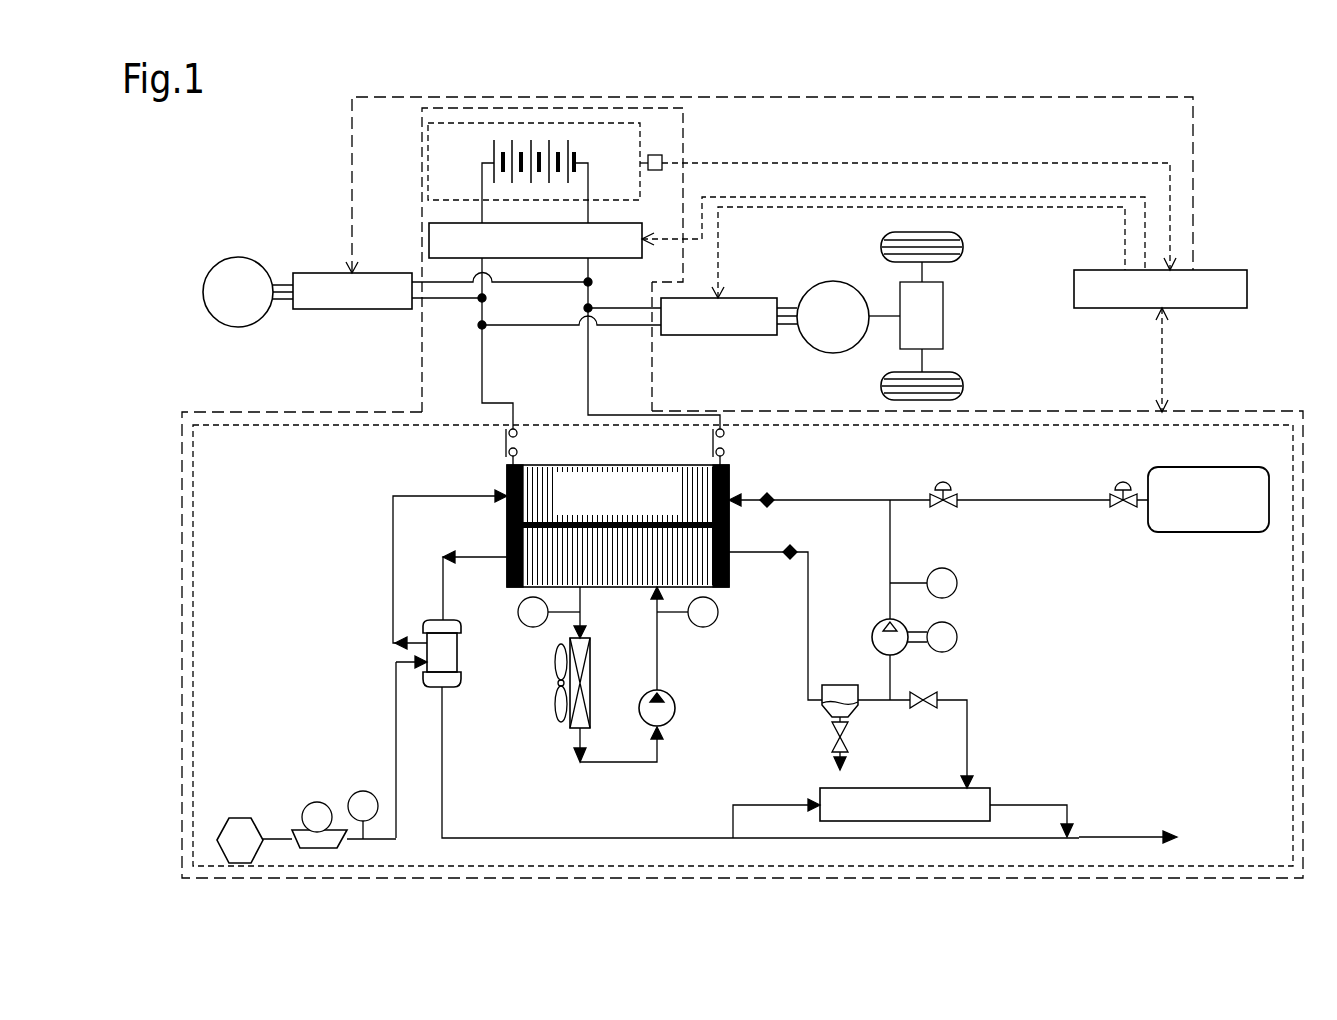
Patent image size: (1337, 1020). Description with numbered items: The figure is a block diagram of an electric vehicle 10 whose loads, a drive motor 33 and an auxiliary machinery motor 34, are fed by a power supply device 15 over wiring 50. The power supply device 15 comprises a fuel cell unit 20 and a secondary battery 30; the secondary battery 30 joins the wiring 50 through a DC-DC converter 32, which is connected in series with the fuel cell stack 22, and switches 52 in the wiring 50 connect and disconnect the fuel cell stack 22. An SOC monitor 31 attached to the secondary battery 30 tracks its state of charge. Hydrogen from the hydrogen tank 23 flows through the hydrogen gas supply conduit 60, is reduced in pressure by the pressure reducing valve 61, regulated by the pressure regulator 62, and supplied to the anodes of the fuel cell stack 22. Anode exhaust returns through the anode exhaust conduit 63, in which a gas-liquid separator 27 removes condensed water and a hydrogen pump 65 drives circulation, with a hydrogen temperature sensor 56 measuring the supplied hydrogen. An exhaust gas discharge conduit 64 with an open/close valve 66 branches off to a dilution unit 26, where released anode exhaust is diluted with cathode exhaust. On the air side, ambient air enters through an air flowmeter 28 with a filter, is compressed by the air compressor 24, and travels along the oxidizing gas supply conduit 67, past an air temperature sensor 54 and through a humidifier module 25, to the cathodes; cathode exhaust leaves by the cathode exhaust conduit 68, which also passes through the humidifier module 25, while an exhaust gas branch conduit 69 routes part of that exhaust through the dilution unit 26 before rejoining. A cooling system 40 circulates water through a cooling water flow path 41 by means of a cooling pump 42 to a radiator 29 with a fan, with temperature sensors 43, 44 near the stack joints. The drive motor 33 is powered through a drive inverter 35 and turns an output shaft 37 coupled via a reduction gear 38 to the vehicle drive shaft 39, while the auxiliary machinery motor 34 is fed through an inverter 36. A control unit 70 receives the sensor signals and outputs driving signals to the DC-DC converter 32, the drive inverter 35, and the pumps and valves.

The electric vehicle 10 is at (1232, 176).
The power supply device 15 is at (1043, 408).
The fuel cell unit 20 is at (1045, 425).
The fuel cell stack 22 is at (565, 465).
The hydrogen tank 23 is at (1235, 532).
The air compressor 24 is at (316, 802).
The humidifier module 25 is at (457, 655).
The dilution unit 26 is at (990, 790).
The gas-liquid separator 27 is at (835, 685).
The air flowmeter 28 is at (258, 818).
The radiator 29 is at (590, 675).
The secondary battery 30 is at (612, 200).
The SOC monitor 31 is at (656, 155).
The DC-DC converter 32 is at (600, 258).
The drive motor 33 is at (828, 353).
The auxiliary machinery motor 34 is at (228, 258).
The drive inverter 35 is at (758, 298).
The inverter 36 is at (316, 273).
The output shaft 37 is at (886, 322).
The reduction gear 38 is at (943, 302).
The vehicle drive shaft 39 is at (922, 362).
The cooling system 40 is at (712, 669).
The cooling water flow path 41 is at (657, 648).
The cooling pump 42 is at (675, 708).
The temperature sensor 43 is at (518, 612).
The temperature sensor 44 is at (718, 612).
The wiring 50 is at (588, 378).
The switches 52 is at (504, 443).
The air temperature sensor 54 is at (366, 791).
The hydrogen temperature sensor 56 is at (957, 583).
The hydrogen gas supply conduit 60 is at (845, 500).
The pressure reducing valve 61 is at (1125, 510).
The pressure regulator 62 is at (945, 510).
The anode exhaust conduit 63 is at (808, 584).
The exhaust gas discharge conduit 64 is at (945, 697).
The hydrogen pump 65 is at (879, 626).
The open/close valve 66 is at (930, 712).
The oxidizing gas supply conduit 67 is at (393, 556).
The cathode exhaust conduit 68 is at (442, 740).
The exhaust gas branch conduit 69 is at (757, 805).
The control unit 70 is at (1247, 290).